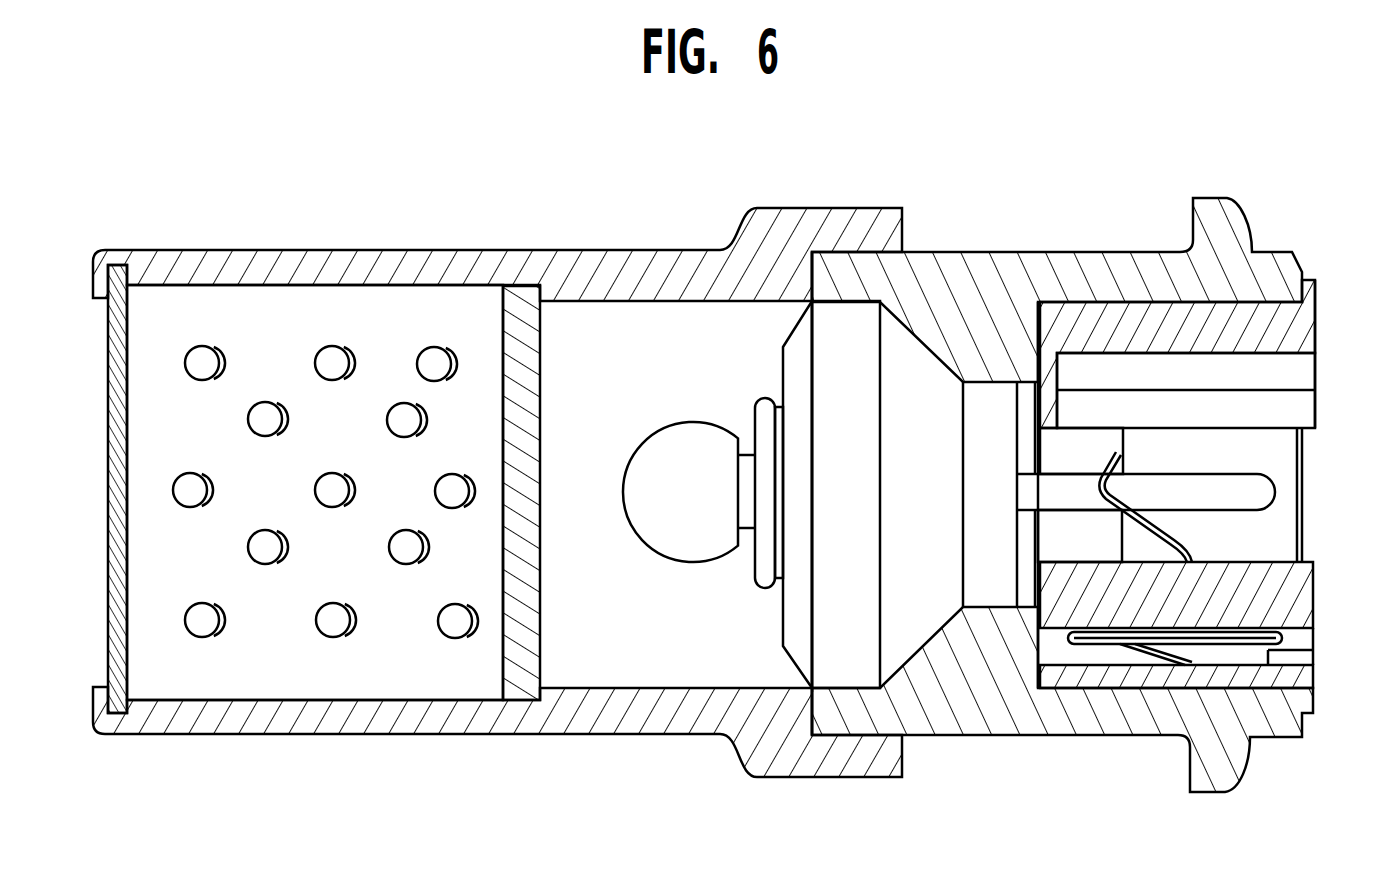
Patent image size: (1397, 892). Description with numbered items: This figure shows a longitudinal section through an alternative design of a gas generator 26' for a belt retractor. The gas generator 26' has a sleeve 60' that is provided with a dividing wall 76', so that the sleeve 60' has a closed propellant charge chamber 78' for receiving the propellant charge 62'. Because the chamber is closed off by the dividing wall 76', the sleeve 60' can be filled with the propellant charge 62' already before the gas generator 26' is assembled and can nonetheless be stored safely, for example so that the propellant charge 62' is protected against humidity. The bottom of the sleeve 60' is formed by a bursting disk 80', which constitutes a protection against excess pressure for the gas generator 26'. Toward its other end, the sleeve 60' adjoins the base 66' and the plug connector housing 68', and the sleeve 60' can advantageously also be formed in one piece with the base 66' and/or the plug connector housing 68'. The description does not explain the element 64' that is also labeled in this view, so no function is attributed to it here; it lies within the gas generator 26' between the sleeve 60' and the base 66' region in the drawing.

The gas generator 26' is at (1063, 452).
The sleeve 60' is at (497, 484).
The propellant charge 62' is at (320, 415).
The valve member 64' is at (841, 424).
The base 66' is at (1057, 283).
The plug connector housing 68' is at (1213, 484).
The dividing wall 76' is at (490, 446).
The propellant charge chamber 78' is at (315, 446).
The bursting disk 80' is at (77, 489).